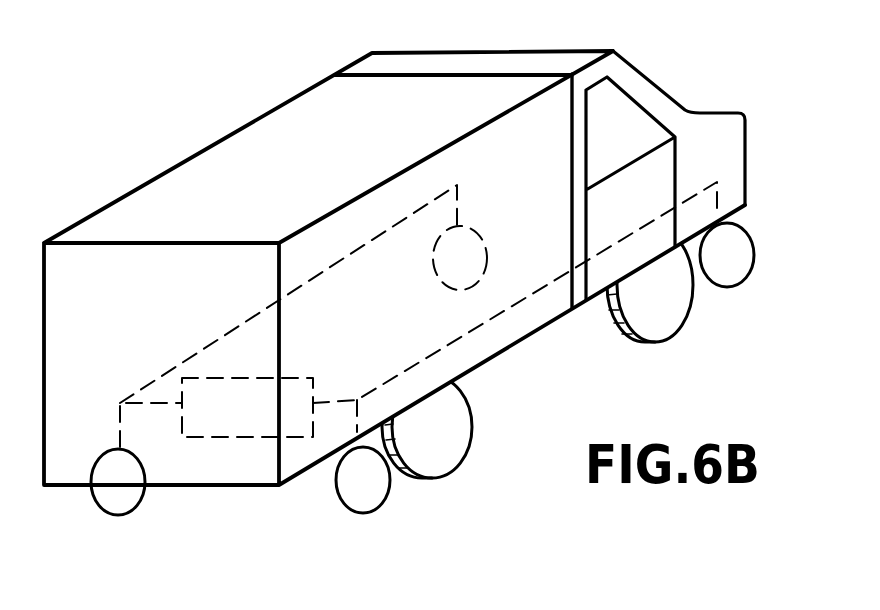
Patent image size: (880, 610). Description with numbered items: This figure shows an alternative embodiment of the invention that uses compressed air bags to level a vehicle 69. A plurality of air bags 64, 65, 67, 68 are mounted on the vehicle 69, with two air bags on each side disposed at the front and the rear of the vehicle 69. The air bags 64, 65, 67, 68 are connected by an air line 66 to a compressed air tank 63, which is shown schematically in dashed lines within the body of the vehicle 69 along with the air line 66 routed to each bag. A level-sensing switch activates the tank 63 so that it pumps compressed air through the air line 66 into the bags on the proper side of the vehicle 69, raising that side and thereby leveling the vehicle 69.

The vehicle 69 is at (195, 147).
The air bag 68 is at (477, 244).
The air bag 65 is at (736, 257).
The air line 66 is at (530, 293).
The air bag 67 is at (128, 497).
The compressed air tank 63 is at (243, 417).
The air bag 64 is at (362, 488).